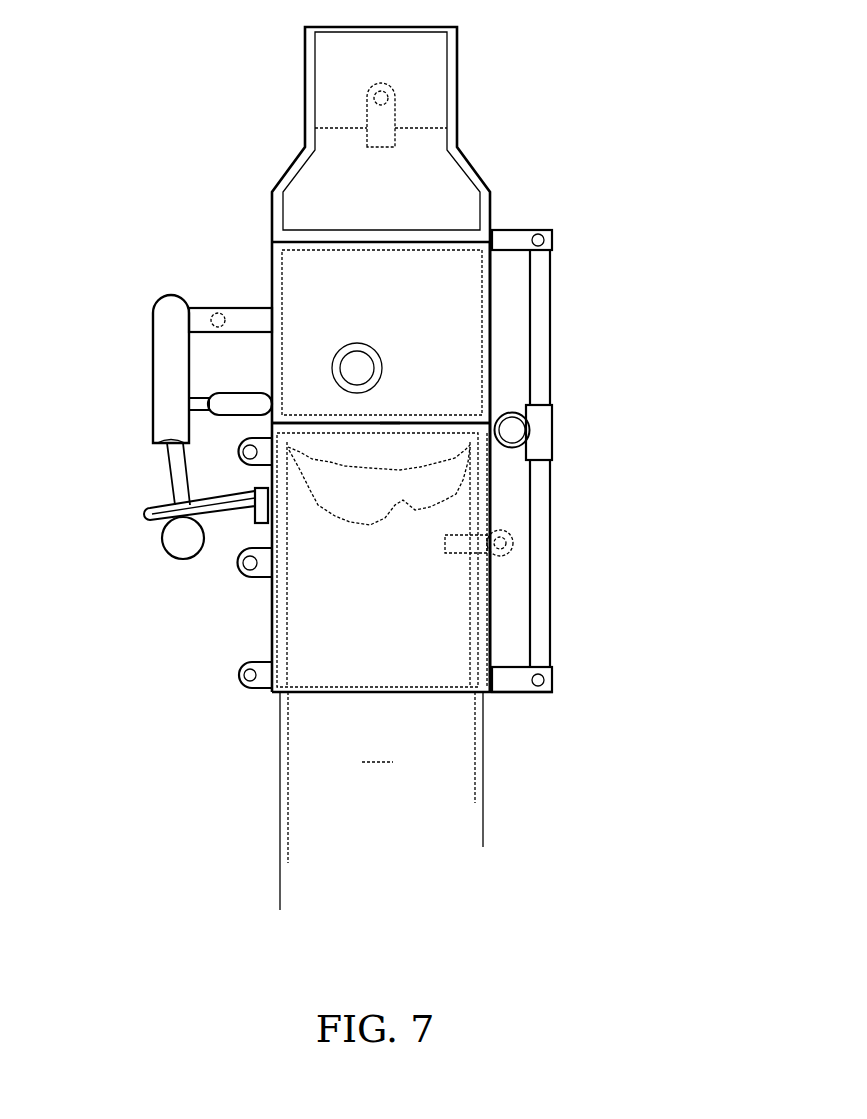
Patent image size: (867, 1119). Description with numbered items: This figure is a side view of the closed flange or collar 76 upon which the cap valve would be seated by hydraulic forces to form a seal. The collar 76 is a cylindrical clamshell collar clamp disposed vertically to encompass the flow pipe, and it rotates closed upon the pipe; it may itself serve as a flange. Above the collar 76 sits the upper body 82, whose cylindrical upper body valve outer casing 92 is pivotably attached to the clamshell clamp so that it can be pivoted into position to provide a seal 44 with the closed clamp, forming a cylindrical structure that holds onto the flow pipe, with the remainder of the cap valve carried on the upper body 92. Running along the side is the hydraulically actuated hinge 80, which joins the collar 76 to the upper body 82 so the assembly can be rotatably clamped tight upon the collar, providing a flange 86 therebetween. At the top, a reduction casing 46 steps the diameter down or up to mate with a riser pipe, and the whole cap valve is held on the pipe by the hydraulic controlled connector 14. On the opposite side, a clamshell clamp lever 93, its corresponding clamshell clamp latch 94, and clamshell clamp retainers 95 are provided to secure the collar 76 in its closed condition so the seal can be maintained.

The hydraulic controlled connector 14 is at (115, 268).
The reduction casing 46 is at (468, 160).
The upper body 82 is at (398, 308).
The attachment seal lock 44 is at (335, 420).
The flange 86 is at (393, 420).
The cylindrical upper body valve outer casing 92 is at (495, 318).
The hydraulically actuated hinge 80 is at (552, 345).
The clamshell clamp lever 93 is at (153, 330).
The clamshell clamp latch 94 is at (235, 525).
The closed flange or collar 76 is at (270, 618).
The clamshell clamp retainer 95 is at (260, 692).